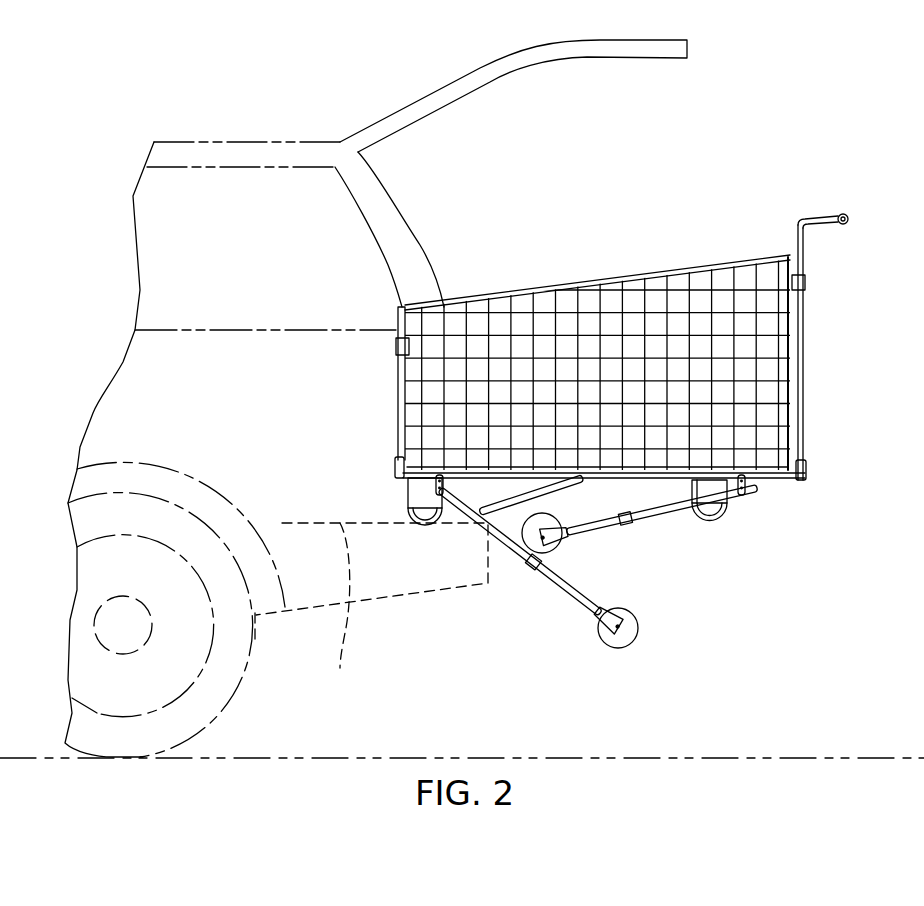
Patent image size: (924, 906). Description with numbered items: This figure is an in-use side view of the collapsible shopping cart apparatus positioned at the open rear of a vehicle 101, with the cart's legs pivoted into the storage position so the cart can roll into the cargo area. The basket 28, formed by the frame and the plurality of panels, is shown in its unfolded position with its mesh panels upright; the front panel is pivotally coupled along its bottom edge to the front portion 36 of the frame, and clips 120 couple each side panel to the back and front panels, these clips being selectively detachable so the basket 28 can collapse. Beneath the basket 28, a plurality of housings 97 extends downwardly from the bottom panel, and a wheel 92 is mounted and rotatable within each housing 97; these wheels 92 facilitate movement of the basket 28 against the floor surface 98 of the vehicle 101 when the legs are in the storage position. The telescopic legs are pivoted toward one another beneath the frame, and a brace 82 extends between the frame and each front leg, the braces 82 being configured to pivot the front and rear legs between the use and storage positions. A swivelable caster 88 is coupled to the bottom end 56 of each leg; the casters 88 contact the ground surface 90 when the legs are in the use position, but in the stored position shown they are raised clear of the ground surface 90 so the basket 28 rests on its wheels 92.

The vehicle 101 is at (402, 190).
The basket 28 is at (393, 393).
The front portion 36 is at (463, 523).
The clips 120 is at (396, 347).
The housings 97 is at (408, 490).
The wheels 92 is at (423, 523).
The braces 82 is at (486, 512).
The bottom end 56 is at (568, 533).
The casters 88 is at (550, 552).
The floor surface 98 is at (341, 616).
The ground surface 90 is at (710, 758).